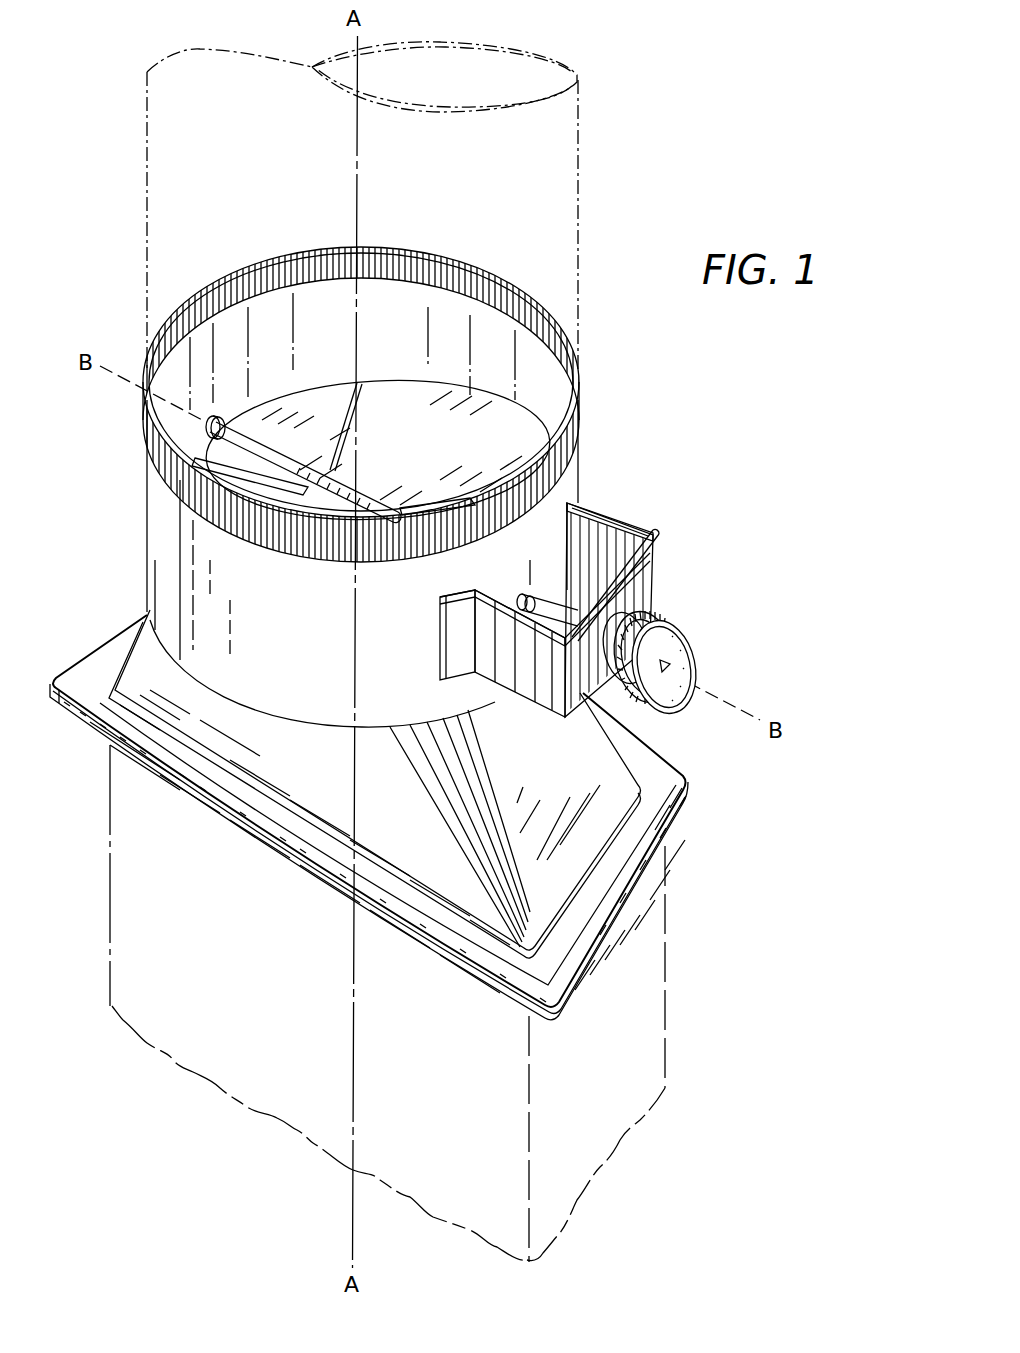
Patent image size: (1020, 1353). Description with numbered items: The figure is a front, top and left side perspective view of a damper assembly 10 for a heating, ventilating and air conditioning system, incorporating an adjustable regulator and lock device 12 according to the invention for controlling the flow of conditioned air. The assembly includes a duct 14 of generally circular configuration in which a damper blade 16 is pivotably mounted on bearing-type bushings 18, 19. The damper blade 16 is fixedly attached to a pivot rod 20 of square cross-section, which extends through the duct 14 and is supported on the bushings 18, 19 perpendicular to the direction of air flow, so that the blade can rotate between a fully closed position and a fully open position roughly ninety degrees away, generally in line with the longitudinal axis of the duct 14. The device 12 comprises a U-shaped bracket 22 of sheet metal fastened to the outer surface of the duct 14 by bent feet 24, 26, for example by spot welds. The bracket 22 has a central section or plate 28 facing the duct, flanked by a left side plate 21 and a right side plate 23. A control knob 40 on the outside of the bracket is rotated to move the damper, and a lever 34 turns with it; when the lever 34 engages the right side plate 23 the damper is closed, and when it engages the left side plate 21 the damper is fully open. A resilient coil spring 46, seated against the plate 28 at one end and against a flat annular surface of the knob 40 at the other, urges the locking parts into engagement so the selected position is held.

The damper assembly 10 is at (642, 426).
The adjustable regulator and lock device 12 is at (632, 524).
The duct 14 is at (340, 659).
The damper blade 16 is at (413, 459).
The bushings 18 is at (520, 597).
The bushing 19 is at (221, 406).
The pivot rod 20 is at (208, 452).
The left side plate 21 is at (528, 672).
The U-shaped bracket 22 is at (660, 594).
The right side plate 23 is at (588, 518).
The bent foot 24 is at (460, 650).
The bent foot 26 is at (573, 507).
The central section/plate 28 is at (618, 731).
The lever 34 is at (668, 546).
The control knob 40 is at (696, 648).
The resilient coil spring 46 is at (668, 608).